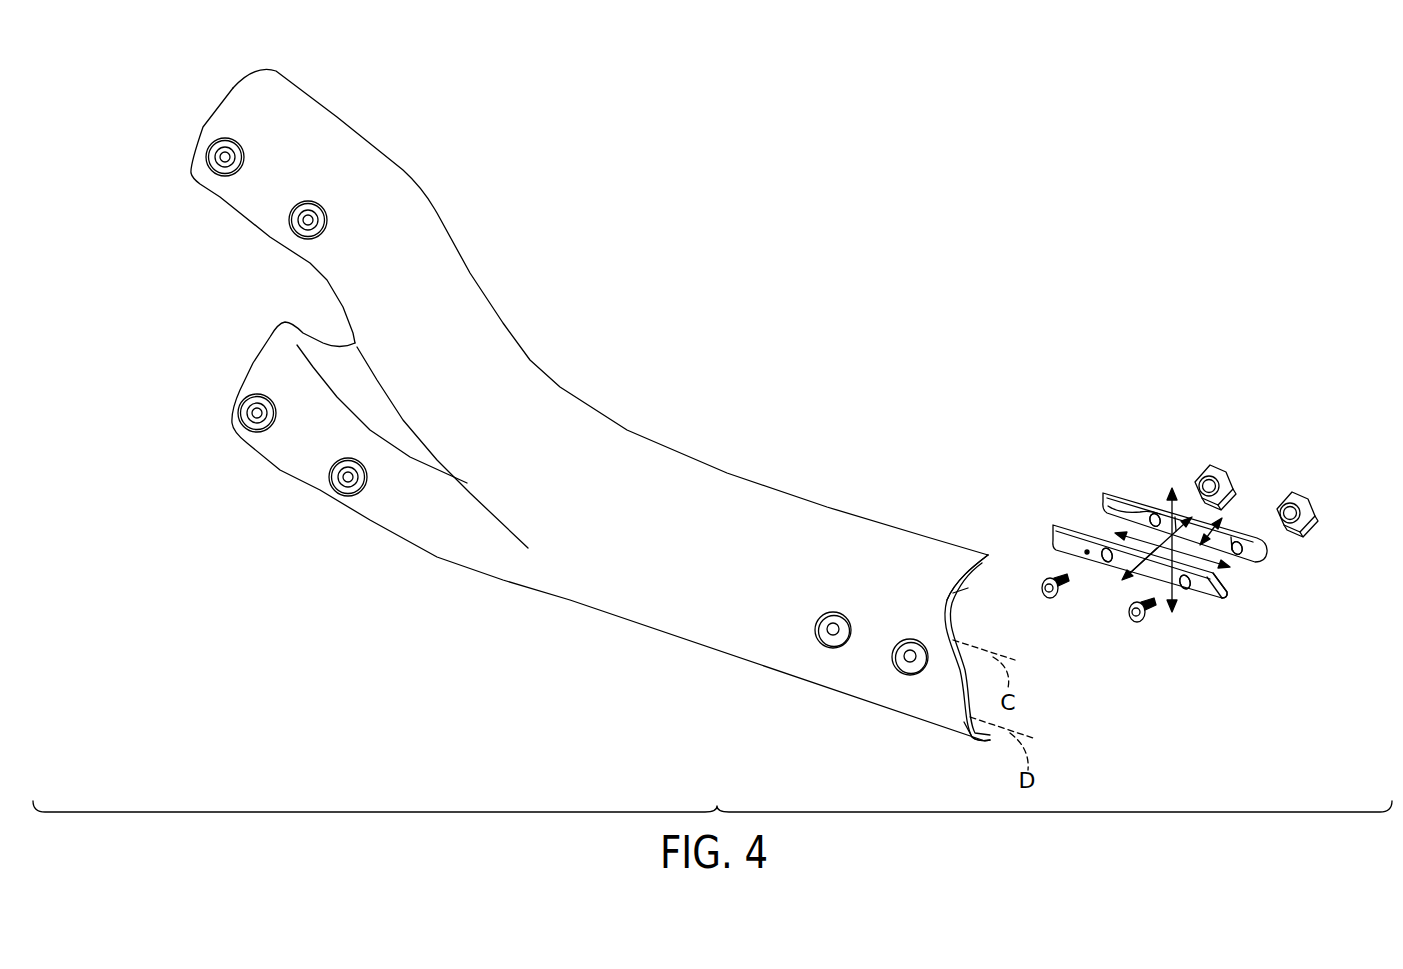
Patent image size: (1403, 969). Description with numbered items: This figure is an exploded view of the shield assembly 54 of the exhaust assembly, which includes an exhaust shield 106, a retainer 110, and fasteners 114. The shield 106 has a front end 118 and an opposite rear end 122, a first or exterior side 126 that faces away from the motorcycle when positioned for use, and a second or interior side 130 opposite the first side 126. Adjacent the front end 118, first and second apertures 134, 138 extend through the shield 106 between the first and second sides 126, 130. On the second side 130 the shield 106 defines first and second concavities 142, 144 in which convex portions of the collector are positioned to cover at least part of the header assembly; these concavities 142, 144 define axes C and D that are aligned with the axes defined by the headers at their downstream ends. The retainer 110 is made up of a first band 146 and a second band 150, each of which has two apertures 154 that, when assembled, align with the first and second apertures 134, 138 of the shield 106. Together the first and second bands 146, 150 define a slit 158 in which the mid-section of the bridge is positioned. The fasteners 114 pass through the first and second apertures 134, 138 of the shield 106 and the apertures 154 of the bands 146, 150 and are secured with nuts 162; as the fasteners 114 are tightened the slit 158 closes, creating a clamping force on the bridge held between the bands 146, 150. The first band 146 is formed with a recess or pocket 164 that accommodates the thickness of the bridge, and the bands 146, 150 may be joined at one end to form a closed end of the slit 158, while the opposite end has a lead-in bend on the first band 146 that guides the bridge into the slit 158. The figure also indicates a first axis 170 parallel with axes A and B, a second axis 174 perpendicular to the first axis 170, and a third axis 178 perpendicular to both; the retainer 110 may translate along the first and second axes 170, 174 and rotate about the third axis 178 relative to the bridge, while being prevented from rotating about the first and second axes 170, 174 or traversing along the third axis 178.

The shield assembly 54 is at (765, 245).
The exhaust shield 106 is at (532, 367).
The retainer 110 is at (1252, 427).
The fasteners 114 is at (1047, 600).
The front end 118 is at (950, 749).
The rear end 122 is at (232, 413).
The first or exterior side 126 is at (423, 538).
The second or interior side 130 is at (980, 566).
The first aperture 134 is at (830, 641).
The second aperture 138 is at (910, 668).
The first concavity 142 is at (967, 591).
The second concavity 144 is at (983, 745).
The first band 146 is at (1260, 552).
The second band 150 is at (1220, 585).
The apertures 154 is at (1107, 505).
The slit 158 is at (1237, 523).
The nuts 162 is at (1213, 466).
The recess or pocket 164 is at (1192, 517).
The first axis 170 is at (1227, 608).
The second axis 174 is at (1178, 500).
The third axis 178 is at (1137, 580).